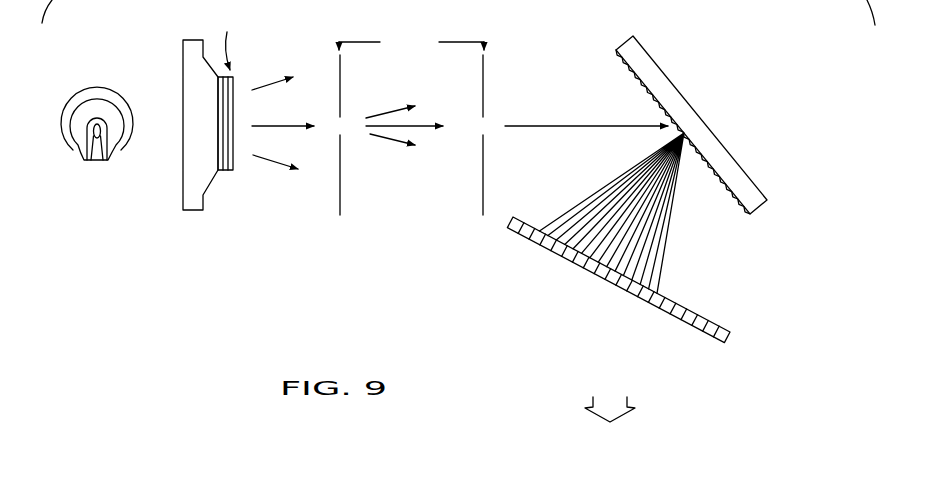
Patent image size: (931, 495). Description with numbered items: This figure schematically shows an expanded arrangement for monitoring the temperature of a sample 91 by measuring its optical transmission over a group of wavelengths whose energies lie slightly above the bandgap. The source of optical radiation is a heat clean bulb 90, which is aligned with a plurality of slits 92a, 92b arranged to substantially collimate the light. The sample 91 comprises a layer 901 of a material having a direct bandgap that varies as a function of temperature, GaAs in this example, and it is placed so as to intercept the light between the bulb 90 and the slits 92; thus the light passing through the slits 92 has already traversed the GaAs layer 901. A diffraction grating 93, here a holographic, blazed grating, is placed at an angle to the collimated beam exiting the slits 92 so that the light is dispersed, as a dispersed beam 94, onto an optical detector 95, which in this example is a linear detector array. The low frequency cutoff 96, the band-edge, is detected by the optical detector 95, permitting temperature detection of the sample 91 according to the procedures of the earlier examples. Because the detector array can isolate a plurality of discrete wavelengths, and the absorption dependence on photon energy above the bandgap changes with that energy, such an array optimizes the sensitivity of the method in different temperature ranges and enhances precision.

The heat clean bulb 90 is at (56, 183).
The sample 91 is at (192, 200).
The layer 901 is at (228, 172).
The slits 92 is at (410, 149).
The slit 92a is at (351, 134).
The slit 92b is at (452, 135).
The diffraction grating 93 is at (666, 72).
The dispersed beam 94 is at (678, 215).
The optical detector 95 is at (729, 345).
The low frequency cutoff 96 is at (639, 315).